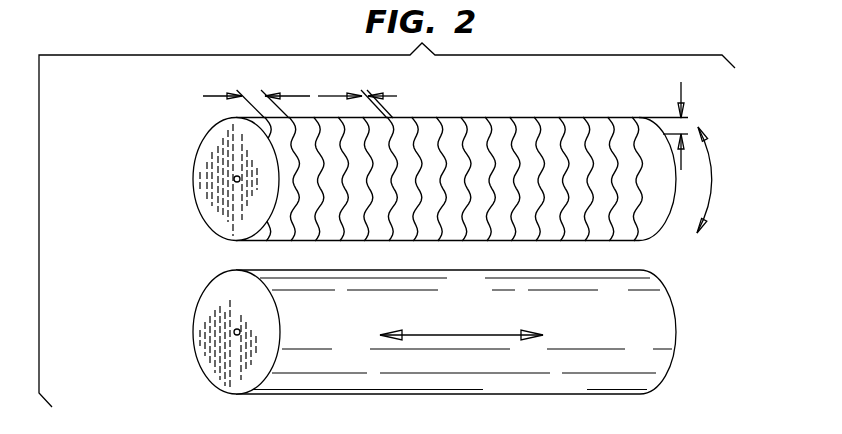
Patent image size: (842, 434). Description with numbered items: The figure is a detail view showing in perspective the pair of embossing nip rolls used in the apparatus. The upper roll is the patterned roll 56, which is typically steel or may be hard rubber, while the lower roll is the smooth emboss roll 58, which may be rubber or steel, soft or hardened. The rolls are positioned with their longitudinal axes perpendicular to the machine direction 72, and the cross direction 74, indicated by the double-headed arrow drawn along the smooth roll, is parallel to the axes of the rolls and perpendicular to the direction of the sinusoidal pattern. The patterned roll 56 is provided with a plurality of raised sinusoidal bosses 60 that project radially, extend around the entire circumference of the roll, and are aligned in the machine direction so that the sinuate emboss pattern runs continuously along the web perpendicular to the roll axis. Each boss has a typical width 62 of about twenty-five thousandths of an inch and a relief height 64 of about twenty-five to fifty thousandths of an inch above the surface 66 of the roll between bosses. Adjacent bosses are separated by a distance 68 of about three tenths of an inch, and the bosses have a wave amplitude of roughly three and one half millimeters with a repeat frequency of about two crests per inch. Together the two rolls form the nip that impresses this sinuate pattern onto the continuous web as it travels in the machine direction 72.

The patterned roll 56 is at (212, 155).
The smooth emboss roll 58 is at (212, 310).
The raised sinusoidal bosses 60 is at (460, 147).
The width 62 is at (397, 96).
The relief height 64 is at (681, 82).
The surface of the roll between bosses 66 is at (335, 160).
The distance 68 is at (204, 96).
The machine direction 72 is at (733, 182).
The cross direction 74 is at (458, 335).